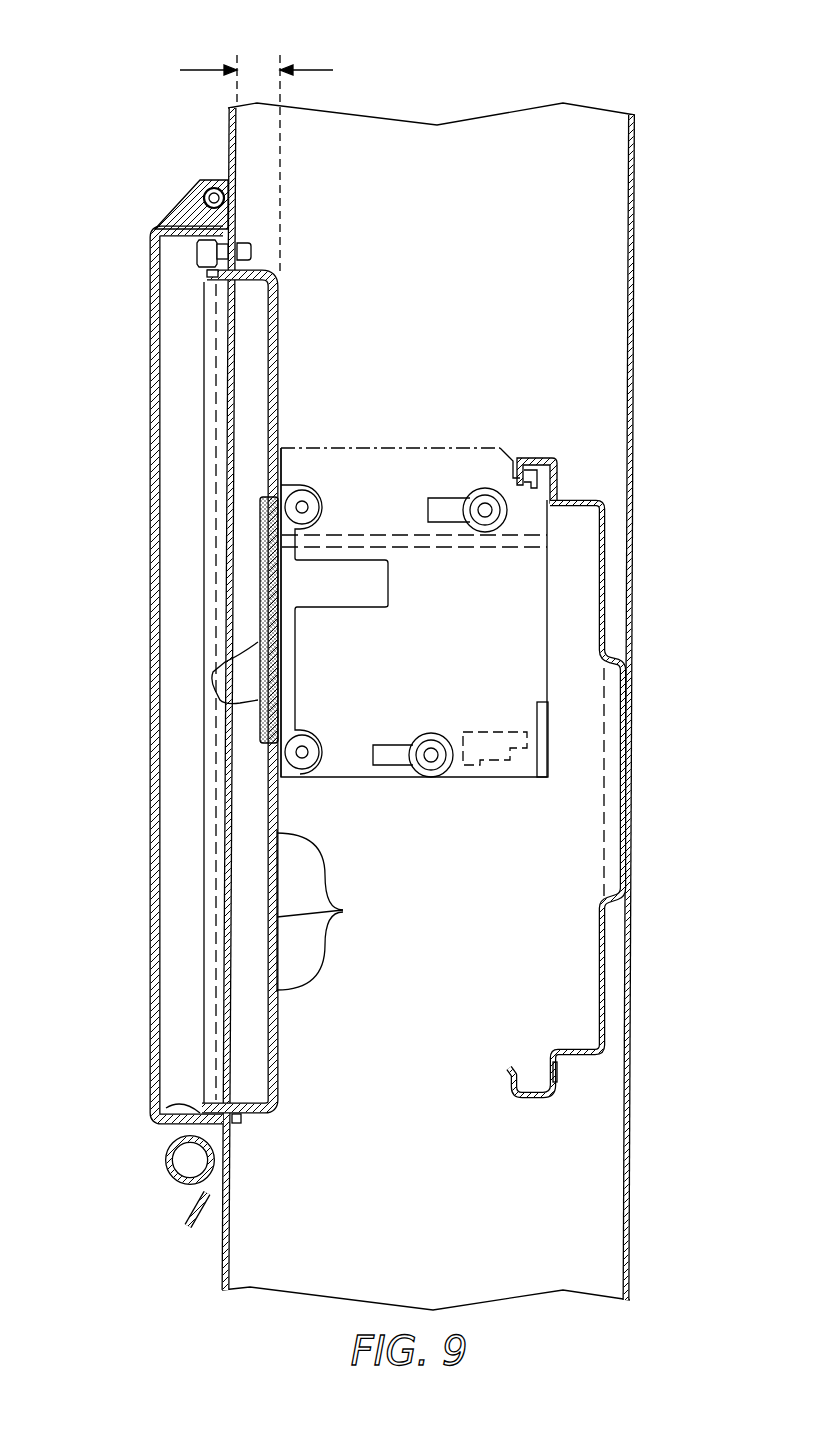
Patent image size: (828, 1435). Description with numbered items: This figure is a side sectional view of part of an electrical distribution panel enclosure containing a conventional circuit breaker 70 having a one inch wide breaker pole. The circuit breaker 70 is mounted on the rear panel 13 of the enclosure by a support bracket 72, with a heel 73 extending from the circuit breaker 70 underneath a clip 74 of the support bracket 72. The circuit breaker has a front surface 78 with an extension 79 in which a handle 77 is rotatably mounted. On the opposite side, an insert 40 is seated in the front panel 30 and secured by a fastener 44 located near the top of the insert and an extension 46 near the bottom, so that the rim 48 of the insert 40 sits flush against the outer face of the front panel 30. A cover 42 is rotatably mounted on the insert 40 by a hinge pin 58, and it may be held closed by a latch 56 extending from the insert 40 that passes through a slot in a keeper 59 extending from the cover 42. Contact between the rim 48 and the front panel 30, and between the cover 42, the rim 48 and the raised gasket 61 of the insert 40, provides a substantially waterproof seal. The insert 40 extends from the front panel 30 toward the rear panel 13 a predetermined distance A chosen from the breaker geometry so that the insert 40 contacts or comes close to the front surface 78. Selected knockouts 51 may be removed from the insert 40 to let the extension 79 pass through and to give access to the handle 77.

The rear panel 13 is at (634, 340).
The front panel 30 is at (228, 137).
The insert 40 is at (280, 282).
The cover 42 is at (156, 337).
The fastener 44 is at (245, 249).
The extension 46 is at (240, 1125).
The rim 48 is at (207, 275).
The knockouts 51 is at (327, 911).
The latch 56 is at (165, 1160).
The hinge pin 58 is at (210, 192).
The keeper 59 is at (188, 1215).
The raised gasket 61 is at (190, 1108).
The circuit breaker 70 is at (415, 670).
The support bracket 72 is at (606, 577).
The heel 73 is at (538, 478).
The clip 74 is at (536, 460).
The handle 77 is at (242, 690).
The front surface 78 is at (282, 470).
The extension 79 is at (258, 520).
The distance A is at (255, 68).